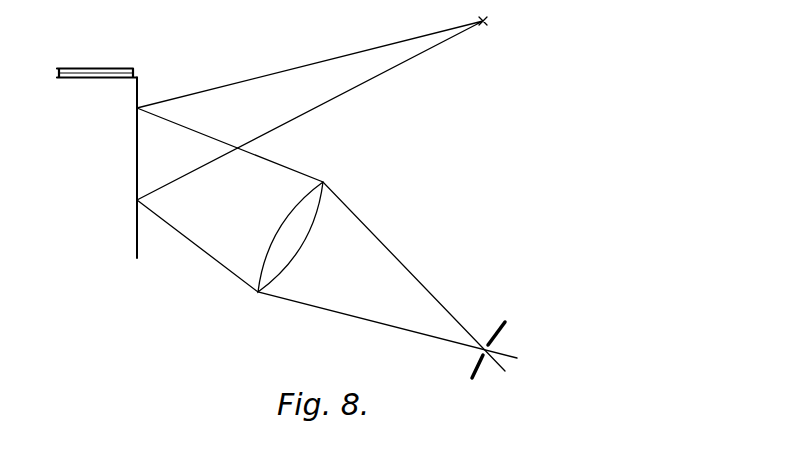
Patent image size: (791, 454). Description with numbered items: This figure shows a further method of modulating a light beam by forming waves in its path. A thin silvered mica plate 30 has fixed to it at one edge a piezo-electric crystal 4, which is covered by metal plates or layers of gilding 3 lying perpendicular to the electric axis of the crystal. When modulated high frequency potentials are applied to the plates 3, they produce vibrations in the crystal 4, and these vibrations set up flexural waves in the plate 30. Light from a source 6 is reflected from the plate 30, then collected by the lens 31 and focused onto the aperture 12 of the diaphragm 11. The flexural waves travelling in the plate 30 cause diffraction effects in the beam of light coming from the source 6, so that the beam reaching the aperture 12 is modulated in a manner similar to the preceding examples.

The metal plates or layers of gilding 3 is at (84, 68).
The piezo-electric crystal 4 is at (108, 68).
The thin silvered mica plate 30 is at (137, 170).
The source 6 is at (483, 28).
The lens 31 is at (254, 283).
The diaphragm 11 is at (500, 323).
The aperture 12 is at (478, 358).